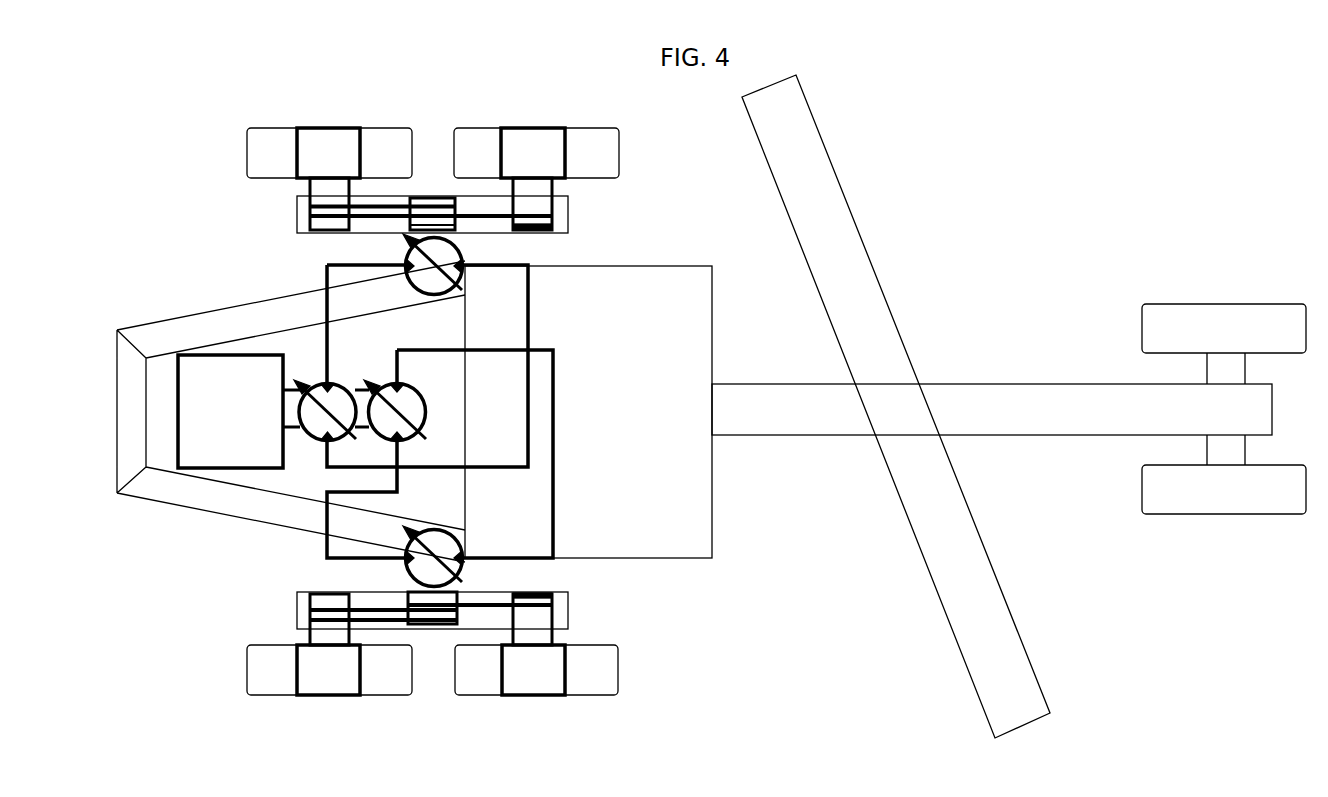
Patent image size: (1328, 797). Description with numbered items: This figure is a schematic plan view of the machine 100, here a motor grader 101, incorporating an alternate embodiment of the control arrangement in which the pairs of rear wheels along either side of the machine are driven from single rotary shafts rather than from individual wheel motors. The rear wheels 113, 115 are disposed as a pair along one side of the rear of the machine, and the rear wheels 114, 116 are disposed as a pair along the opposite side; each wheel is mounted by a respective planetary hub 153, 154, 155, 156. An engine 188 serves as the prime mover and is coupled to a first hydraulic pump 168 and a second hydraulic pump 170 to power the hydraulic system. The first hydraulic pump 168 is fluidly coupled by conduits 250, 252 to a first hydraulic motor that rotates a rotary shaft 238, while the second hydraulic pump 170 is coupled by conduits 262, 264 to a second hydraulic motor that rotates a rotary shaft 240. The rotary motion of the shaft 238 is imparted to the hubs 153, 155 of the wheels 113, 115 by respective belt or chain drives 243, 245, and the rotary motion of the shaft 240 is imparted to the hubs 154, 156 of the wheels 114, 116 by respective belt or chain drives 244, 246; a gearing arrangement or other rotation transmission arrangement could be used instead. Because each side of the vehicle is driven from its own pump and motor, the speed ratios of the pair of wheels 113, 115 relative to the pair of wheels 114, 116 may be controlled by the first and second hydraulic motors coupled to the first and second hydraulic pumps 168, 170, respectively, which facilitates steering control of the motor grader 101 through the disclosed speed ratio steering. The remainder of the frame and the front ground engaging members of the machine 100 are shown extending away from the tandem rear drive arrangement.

The machine 100 is at (915, 187).
The motor grader 101 is at (968, 243).
The rear wheel 113 is at (598, 695).
The rear wheel 114 is at (480, 128).
The rear wheel 115 is at (262, 695).
The rear wheel 116 is at (263, 128).
The planetary hub 153 is at (528, 697).
The planetary hub 154 is at (540, 128).
The planetary hub 155 is at (322, 697).
The planetary hub 156 is at (323, 128).
The first hydraulic pump 168 is at (378, 383).
The second hydraulic pump 170 is at (317, 440).
The engine 188 is at (250, 422).
The rotary shaft 238 is at (457, 593).
The rotary shaft 240 is at (452, 228).
The belt or chain drive 243 is at (550, 603).
The belt or chain drive 244 is at (542, 219).
The belt or chain drive 245 is at (318, 613).
The belt or chain drive 246 is at (317, 207).
The conduit 250 is at (553, 448).
The conduit 252 is at (325, 547).
The conduit 262 is at (530, 308).
The conduit 264 is at (327, 280).